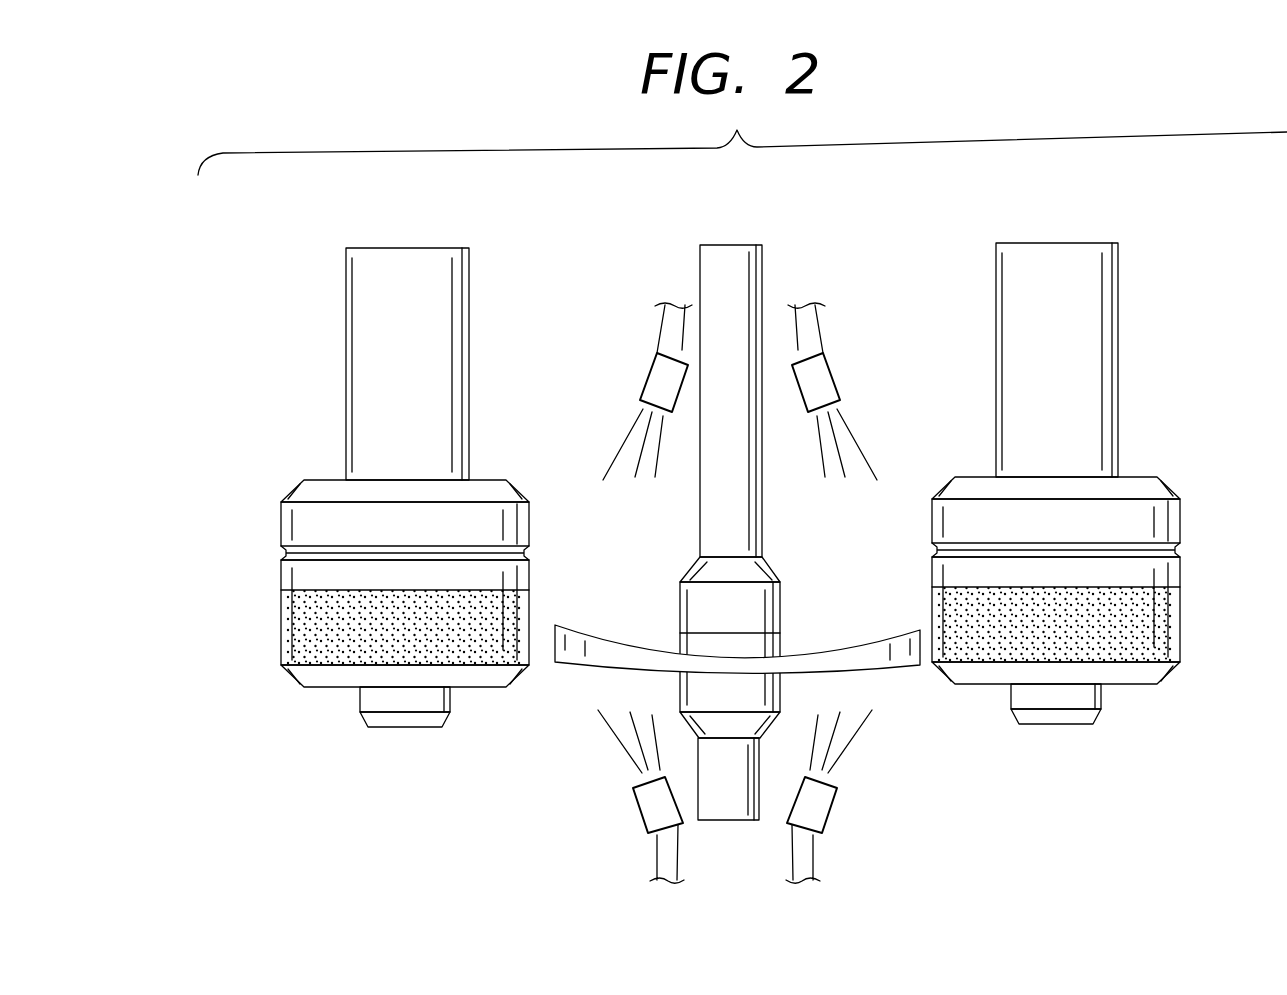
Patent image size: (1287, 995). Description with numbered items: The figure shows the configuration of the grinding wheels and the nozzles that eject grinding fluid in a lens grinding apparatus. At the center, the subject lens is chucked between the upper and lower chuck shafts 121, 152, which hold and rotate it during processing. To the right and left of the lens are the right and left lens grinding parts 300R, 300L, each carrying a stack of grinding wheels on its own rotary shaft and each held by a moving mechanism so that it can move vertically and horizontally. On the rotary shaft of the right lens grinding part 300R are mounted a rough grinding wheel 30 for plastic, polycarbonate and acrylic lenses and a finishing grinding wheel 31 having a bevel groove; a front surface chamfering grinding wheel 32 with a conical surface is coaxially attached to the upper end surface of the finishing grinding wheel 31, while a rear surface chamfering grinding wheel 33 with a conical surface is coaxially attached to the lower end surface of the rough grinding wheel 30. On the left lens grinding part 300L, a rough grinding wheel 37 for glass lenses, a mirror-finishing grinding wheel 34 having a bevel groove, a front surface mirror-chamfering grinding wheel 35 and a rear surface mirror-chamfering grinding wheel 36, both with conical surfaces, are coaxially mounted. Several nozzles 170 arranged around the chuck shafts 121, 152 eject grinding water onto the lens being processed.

The left lens grinding part 300L is at (328, 343).
The right lens grinding part 300R is at (1125, 351).
The rough grinding wheel 30 is at (1098, 609).
The finishing grinding wheel 31 is at (1098, 528).
The front surface chamfering grinding wheel 32 is at (1092, 451).
The rear surface chamfering grinding wheel 33 is at (1098, 695).
The mirror-finishing grinding wheel 34 is at (295, 532).
The front surface mirror-chamfering grinding wheel 35 is at (296, 490).
The rear surface mirror-chamfering grinding wheel 36 is at (295, 680).
The rough grinding wheel 37 is at (297, 645).
The chuck shaft 121 is at (708, 272).
The chuck shaft 152 is at (725, 813).
The nozzle 170 is at (652, 337).